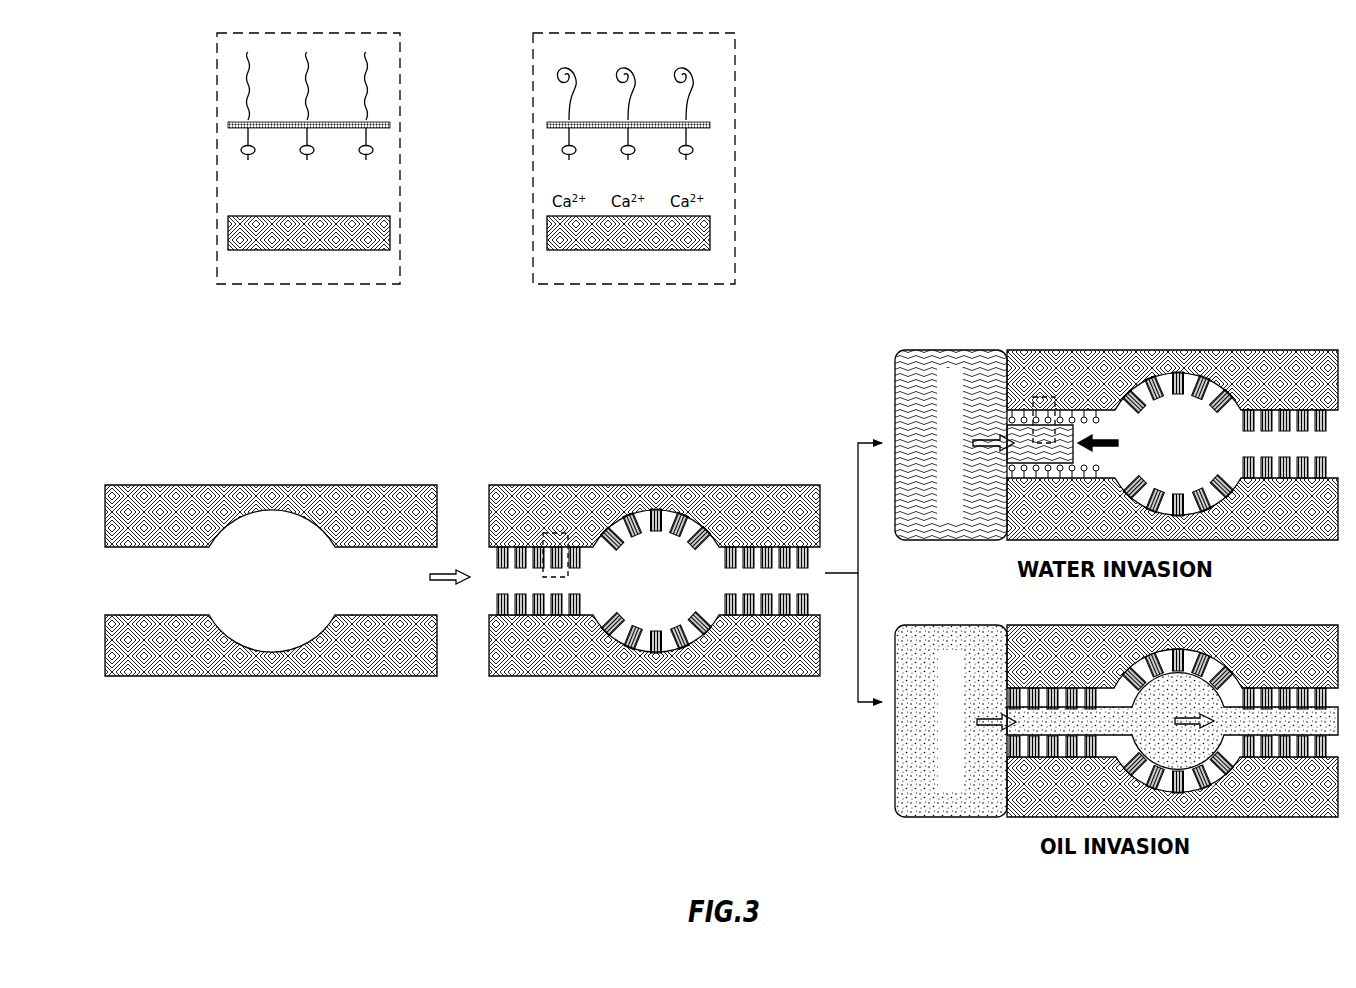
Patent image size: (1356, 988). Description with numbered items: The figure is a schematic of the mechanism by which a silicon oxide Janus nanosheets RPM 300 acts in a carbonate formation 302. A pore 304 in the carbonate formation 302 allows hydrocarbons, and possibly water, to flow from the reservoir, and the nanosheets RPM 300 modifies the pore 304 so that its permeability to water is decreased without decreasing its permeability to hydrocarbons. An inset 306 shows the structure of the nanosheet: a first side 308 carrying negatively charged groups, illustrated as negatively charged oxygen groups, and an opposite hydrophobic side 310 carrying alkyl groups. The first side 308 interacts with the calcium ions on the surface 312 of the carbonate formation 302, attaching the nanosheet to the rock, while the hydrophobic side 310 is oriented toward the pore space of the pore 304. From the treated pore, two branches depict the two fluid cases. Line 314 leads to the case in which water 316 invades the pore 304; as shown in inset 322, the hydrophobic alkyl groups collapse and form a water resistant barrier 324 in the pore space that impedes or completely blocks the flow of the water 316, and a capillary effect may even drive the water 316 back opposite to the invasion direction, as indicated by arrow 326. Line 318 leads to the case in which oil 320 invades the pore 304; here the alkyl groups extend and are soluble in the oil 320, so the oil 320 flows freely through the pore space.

The silicon oxide Janus nanosheets RPM 300 is at (217, 125).
The carbonate formation 302 is at (152, 485).
The pore 304 is at (168, 594).
The inset 306 is at (217, 33).
The first side 308 is at (227, 175).
The hydrophobic side 310 is at (236, 87).
The surface 312 is at (392, 238).
The line 314 is at (884, 441).
The water 316 is at (915, 350).
The line 318 is at (884, 706).
The oil 320 is at (918, 817).
The inset 322 is at (534, 33).
The water resistant barrier 324 is at (554, 78).
The arrow 326 is at (1118, 443).